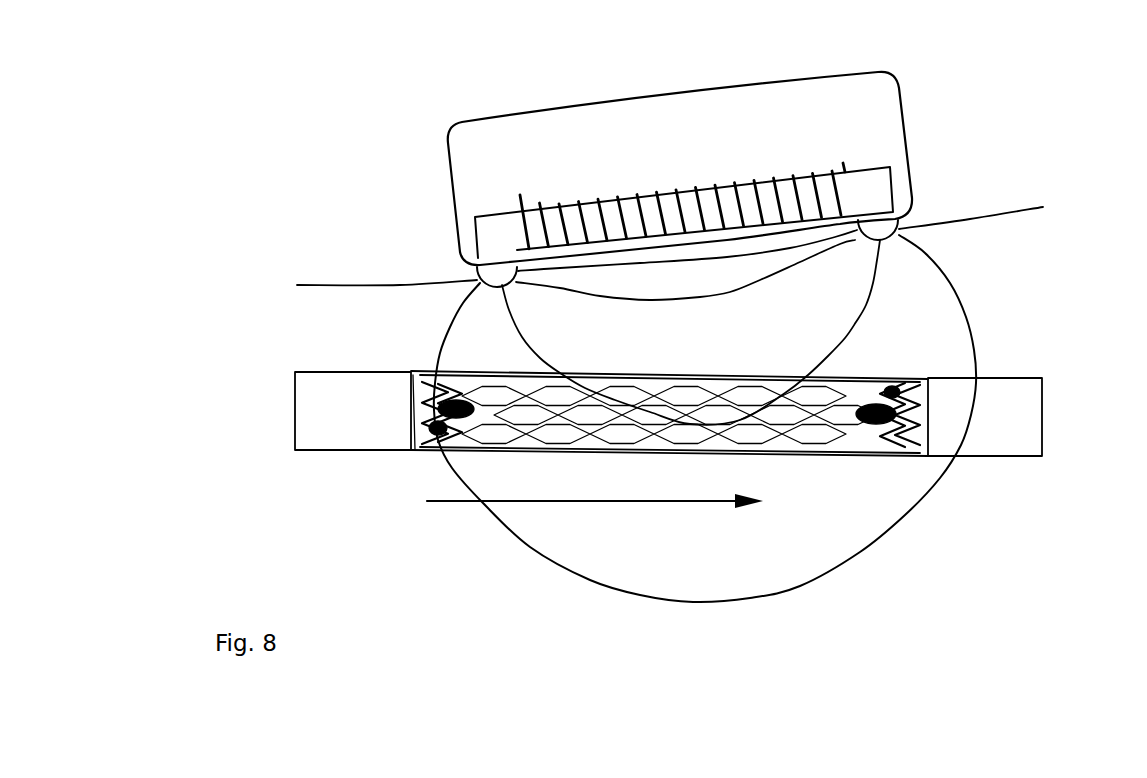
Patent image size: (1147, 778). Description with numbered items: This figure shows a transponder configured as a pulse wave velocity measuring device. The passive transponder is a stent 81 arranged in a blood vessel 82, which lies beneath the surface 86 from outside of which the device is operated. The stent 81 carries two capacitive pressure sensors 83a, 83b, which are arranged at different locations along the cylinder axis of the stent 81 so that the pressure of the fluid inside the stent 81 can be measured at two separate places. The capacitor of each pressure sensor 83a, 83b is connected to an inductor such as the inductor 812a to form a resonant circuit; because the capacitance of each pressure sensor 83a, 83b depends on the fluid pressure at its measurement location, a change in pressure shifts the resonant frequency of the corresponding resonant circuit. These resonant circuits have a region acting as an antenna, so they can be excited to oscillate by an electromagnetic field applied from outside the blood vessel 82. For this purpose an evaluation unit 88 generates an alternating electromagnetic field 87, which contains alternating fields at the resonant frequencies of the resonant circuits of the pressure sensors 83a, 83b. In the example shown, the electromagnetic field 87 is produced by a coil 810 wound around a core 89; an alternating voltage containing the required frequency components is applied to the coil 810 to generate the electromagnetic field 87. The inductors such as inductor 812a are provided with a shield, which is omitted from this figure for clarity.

The evaluation unit 88 is at (860, 90).
The core 89 is at (877, 183).
The coil 810 is at (732, 183).
The skin surface 86 is at (1005, 238).
The alternating electromagnetic field 87 is at (812, 613).
The blood vessel 82 is at (519, 455).
The stent 81 is at (772, 452).
The capacitive pressure sensor 83a is at (427, 458).
The capacitive pressure sensor 83b is at (867, 463).
The inductor 812a is at (410, 417).